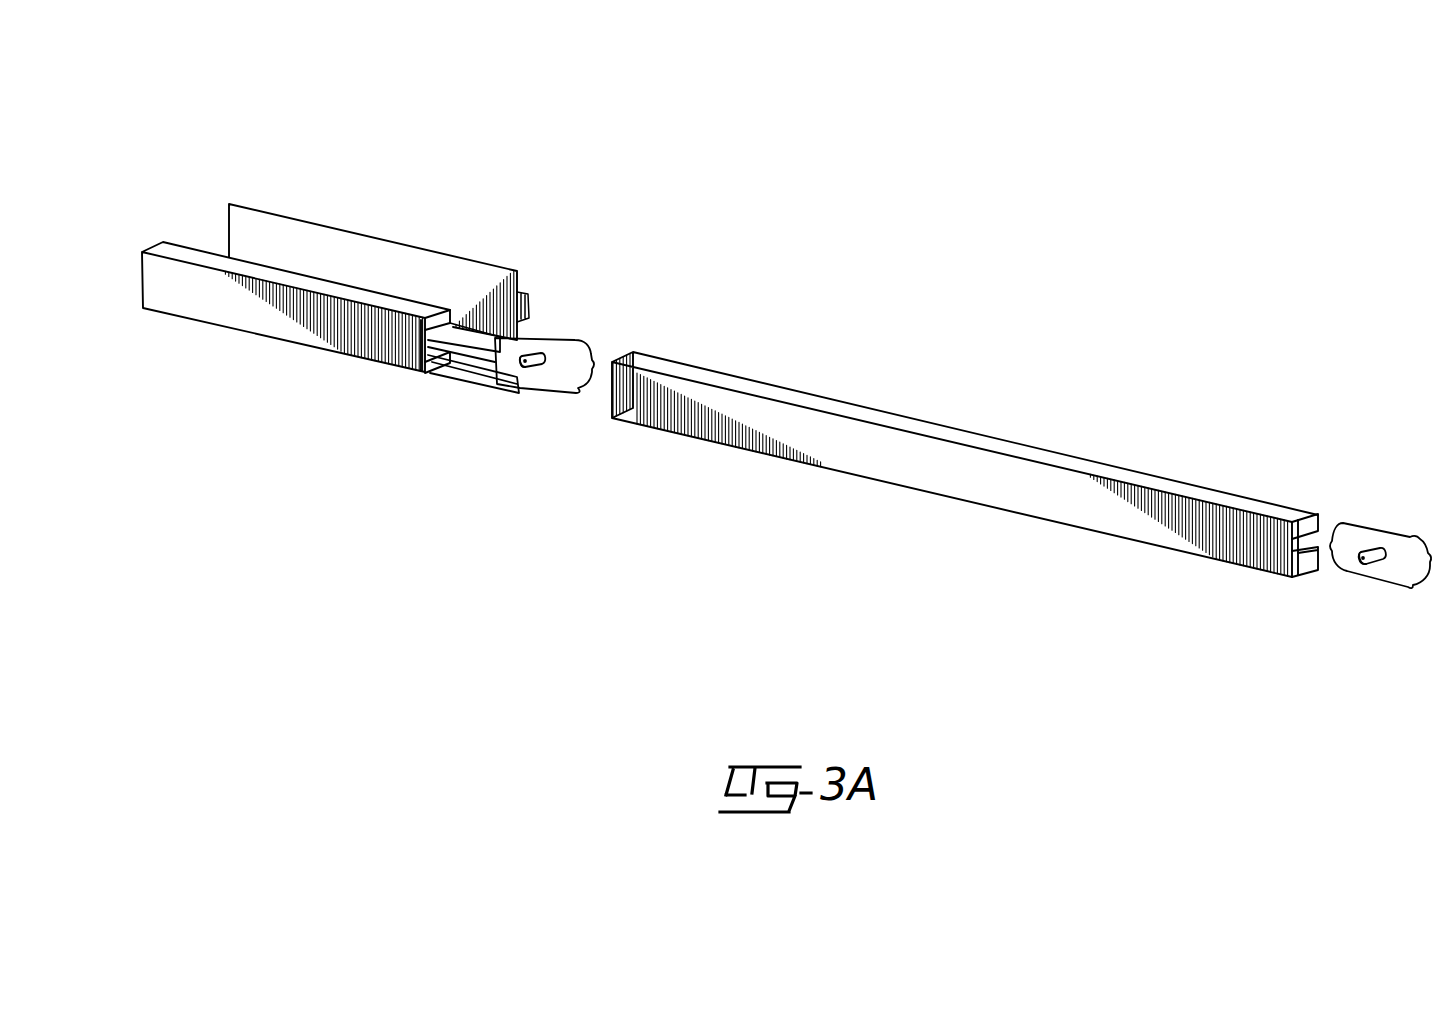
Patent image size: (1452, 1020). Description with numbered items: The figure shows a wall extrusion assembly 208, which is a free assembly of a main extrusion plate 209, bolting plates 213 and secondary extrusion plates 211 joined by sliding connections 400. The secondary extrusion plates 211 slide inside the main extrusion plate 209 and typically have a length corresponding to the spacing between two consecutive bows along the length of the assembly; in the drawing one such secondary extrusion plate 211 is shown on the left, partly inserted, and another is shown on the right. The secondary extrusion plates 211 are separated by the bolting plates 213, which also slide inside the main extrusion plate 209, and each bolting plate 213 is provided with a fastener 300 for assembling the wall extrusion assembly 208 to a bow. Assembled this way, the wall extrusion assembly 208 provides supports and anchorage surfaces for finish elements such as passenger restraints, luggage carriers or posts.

The wall extrusion assembly 208 is at (1046, 604).
The main extrusion plate 209 is at (352, 257).
The secondary extrusion plate 211 is at (320, 332).
The bolting plate 213 is at (557, 373).
The fastener 300 is at (538, 352).
The sliding connection 400 is at (672, 244).